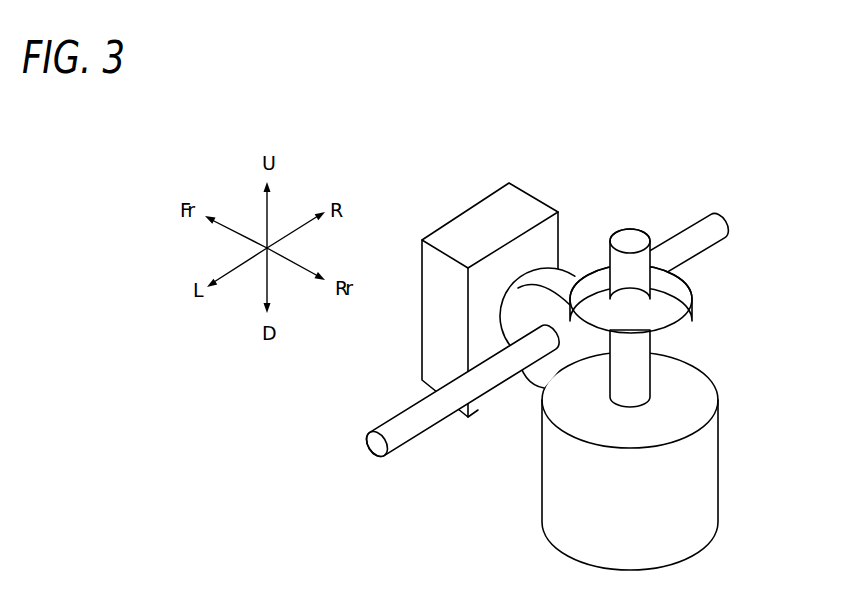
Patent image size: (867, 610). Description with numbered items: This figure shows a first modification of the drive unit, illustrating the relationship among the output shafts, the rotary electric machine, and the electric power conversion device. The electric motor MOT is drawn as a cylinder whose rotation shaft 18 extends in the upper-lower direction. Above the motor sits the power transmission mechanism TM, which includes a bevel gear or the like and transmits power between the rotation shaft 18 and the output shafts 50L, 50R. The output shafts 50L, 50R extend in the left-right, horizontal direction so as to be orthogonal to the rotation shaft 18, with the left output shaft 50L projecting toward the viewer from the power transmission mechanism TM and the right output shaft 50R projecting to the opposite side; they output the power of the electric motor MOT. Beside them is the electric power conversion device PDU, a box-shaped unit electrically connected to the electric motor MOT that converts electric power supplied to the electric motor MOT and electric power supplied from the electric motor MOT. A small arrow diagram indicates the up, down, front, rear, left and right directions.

The electric power conversion device PDU is at (468, 223).
The power transmission mechanism TM is at (590, 262).
The output shaft 50R is at (693, 232).
The output shaft 50L is at (422, 424).
The rotation shaft 18 is at (638, 277).
The electric motor MOT is at (708, 463).